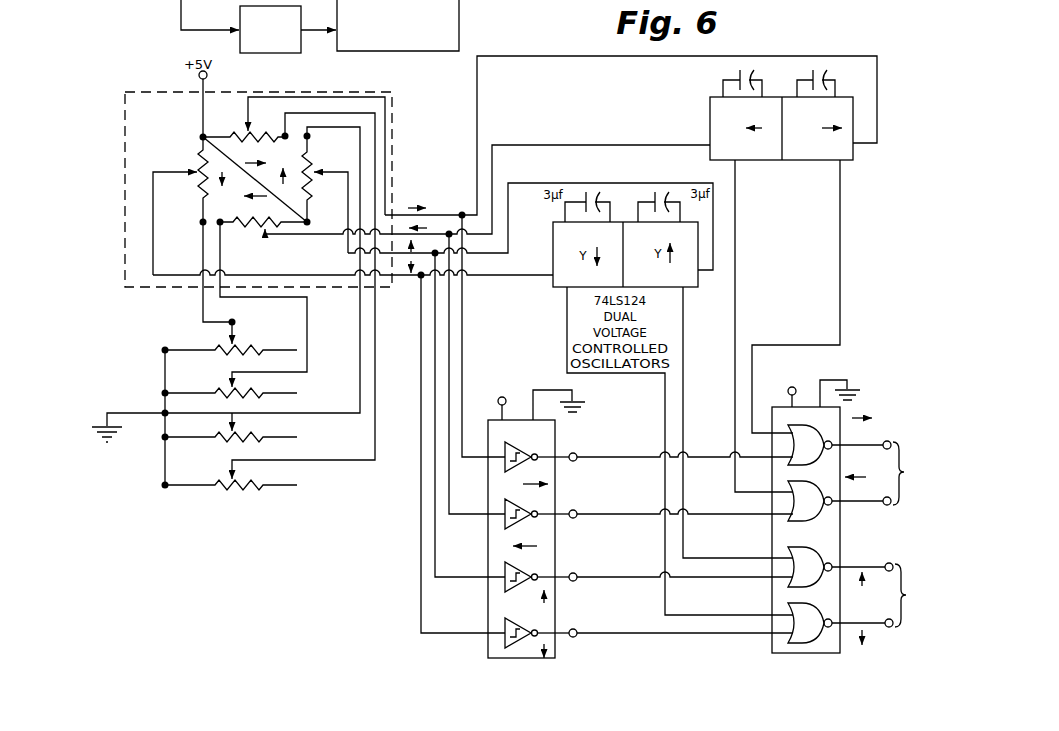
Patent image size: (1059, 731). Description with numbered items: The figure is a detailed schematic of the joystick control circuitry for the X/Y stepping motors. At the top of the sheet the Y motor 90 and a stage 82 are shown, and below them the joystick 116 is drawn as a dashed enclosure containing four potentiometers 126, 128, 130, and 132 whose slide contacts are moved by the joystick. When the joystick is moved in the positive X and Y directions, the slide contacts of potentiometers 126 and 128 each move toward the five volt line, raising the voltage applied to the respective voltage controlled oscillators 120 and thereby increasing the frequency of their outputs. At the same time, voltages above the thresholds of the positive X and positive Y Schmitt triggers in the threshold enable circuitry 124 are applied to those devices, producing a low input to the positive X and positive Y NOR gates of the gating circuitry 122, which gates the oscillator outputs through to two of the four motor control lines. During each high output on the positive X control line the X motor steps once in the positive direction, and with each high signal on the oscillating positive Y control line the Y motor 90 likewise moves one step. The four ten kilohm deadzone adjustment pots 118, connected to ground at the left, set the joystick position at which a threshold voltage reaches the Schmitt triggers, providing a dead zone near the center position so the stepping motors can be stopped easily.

The stage 82 is at (470, 0).
The Y motor 90 is at (302, 43).
The joystick 116 is at (121, 206).
The deadzone adjustment pots 118 is at (238, 506).
The voltage controlled oscillators 120 is at (859, 164).
The gating circuitry 122 is at (763, 590).
The threshold enable circuitry 124 is at (411, 585).
The potentiometer 126 is at (263, 133).
The potentiometer 128 is at (315, 194).
The potentiometer 130 is at (242, 215).
The potentiometer 132 is at (187, 206).